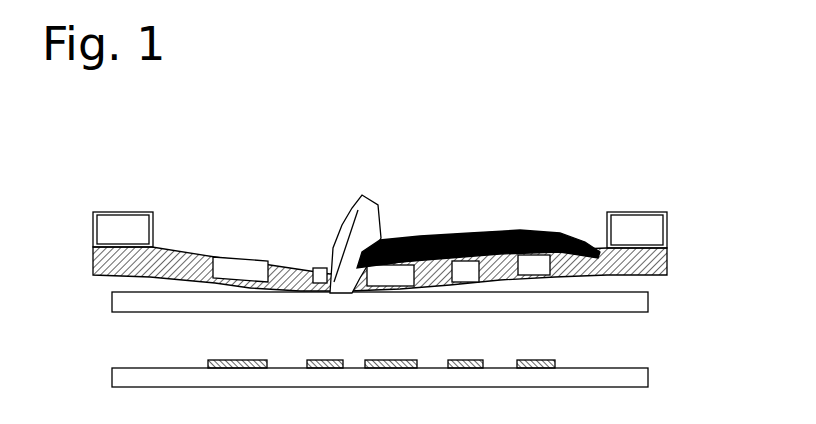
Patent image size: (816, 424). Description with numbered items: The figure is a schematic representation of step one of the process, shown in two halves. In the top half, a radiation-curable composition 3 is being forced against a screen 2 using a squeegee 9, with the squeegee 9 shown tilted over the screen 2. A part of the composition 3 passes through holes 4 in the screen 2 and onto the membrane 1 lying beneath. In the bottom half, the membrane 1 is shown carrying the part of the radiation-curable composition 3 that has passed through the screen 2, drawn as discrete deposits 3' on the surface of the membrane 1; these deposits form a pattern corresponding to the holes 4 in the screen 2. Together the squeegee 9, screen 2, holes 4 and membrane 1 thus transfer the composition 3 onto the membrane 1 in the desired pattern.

The membrane 1 is at (648, 368).
The screen 2 is at (177, 258).
The radiation-curable composition 3 is at (478, 227).
The contact pads 3' is at (381, 343).
The holes 4 is at (237, 267).
The squeegee 9 is at (342, 225).